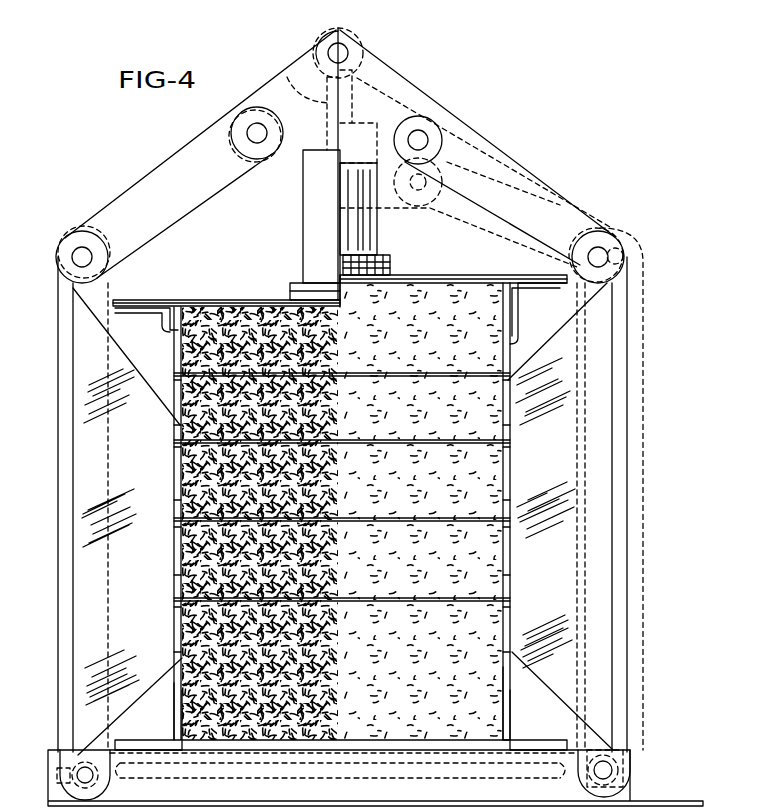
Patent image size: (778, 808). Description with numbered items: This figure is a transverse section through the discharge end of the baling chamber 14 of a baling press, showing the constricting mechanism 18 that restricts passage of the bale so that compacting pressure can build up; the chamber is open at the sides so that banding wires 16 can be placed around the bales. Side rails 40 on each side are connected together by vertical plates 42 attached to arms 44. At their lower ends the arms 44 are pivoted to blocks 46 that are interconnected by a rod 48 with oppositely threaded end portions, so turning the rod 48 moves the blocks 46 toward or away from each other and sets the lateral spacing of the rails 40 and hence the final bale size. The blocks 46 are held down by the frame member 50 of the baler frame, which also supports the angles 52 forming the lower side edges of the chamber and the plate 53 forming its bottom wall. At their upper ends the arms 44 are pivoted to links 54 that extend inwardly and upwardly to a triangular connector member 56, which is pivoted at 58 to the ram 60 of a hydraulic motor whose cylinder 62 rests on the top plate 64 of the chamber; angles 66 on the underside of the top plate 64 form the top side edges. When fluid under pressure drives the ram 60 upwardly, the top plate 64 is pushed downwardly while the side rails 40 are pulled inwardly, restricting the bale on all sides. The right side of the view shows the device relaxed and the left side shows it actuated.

The baling chamber 14 is at (100, 494).
The banding wires 16 is at (487, 370).
The constricting mechanism 18 is at (492, 108).
The side rails 40 is at (178, 462).
The vertical plates 42 is at (80, 525).
The arms 44 is at (60, 463).
The blocks 46 is at (47, 787).
The rod 48 is at (632, 781).
The frame member 50 is at (633, 747).
The angles 52 is at (140, 737).
The plate 53 is at (487, 737).
The links 54 is at (145, 192).
The triangular connector member 56 is at (394, 92).
The pivot 58 is at (343, 58).
The ram 60 is at (306, 77).
The cylinder 62 is at (303, 233).
The top plate 64 is at (264, 299).
The angles 66 is at (164, 327).